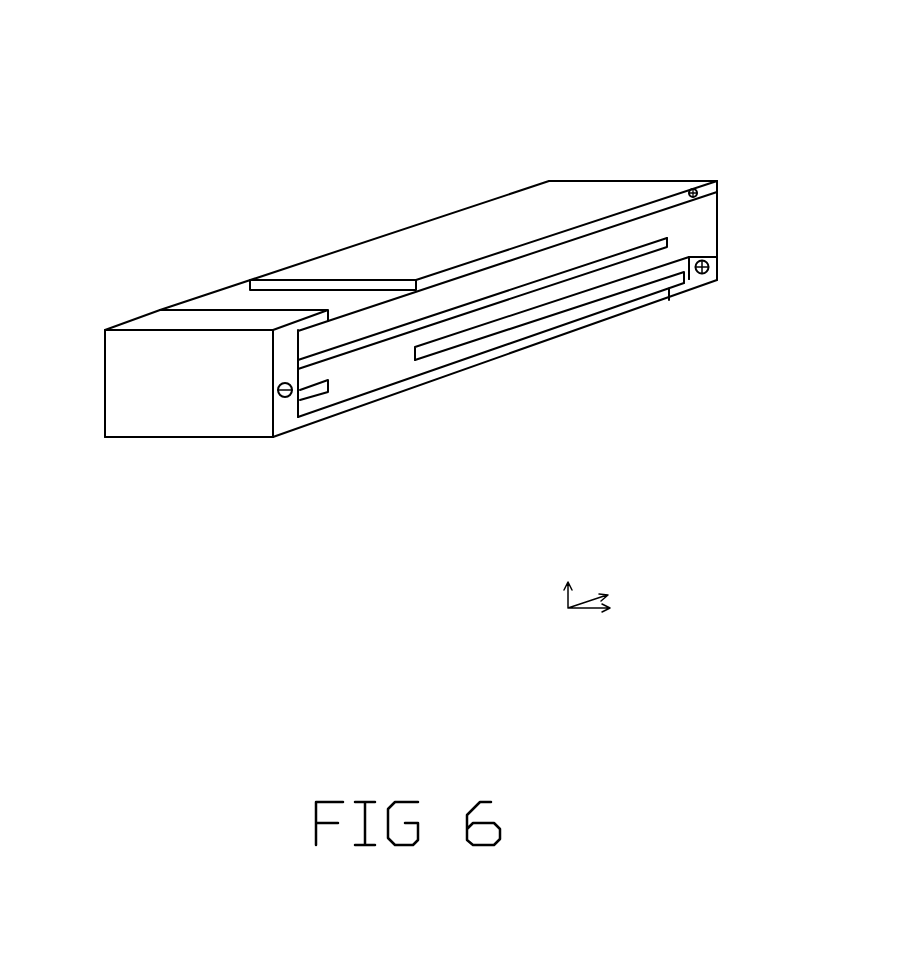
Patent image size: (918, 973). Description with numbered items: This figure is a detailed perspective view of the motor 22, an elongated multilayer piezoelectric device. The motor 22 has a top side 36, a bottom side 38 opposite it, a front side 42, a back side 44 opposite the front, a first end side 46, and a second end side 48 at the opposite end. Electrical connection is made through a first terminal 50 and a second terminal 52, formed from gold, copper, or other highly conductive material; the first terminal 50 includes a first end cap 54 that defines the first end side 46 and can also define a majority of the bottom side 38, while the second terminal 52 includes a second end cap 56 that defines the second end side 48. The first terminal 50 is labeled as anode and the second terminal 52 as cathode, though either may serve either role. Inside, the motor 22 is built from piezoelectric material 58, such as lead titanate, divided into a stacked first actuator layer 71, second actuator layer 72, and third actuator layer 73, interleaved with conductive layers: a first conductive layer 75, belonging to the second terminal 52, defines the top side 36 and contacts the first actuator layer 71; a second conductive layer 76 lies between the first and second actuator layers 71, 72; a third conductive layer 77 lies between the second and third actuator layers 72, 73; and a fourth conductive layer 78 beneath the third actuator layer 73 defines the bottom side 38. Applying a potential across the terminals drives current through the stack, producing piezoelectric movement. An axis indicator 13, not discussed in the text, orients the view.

The motor 22 is at (264, 87).
The top side 36 is at (412, 238).
The bottom side 38 is at (397, 395).
The front side 42 is at (362, 322).
The back side 44 is at (233, 296).
The first end side 46 is at (137, 427).
The second end side 48 is at (718, 217).
The first terminal 50 is at (241, 430).
The second terminal 52 is at (704, 286).
The first end cap 54 is at (123, 360).
The second end cap 56 is at (713, 266).
The piezoelectric material 58 is at (365, 388).
The first actuator layer 71 is at (542, 263).
The second actuator layer 72 is at (510, 312).
The third actuator layer 73 is at (483, 350).
The first conductive layer 75 is at (603, 223).
The second conductive layer 76 is at (642, 250).
The third conductive layer 77 is at (648, 278).
The fourth conductive layer 78 is at (612, 320).
The coordinate system 13 is at (589, 630).